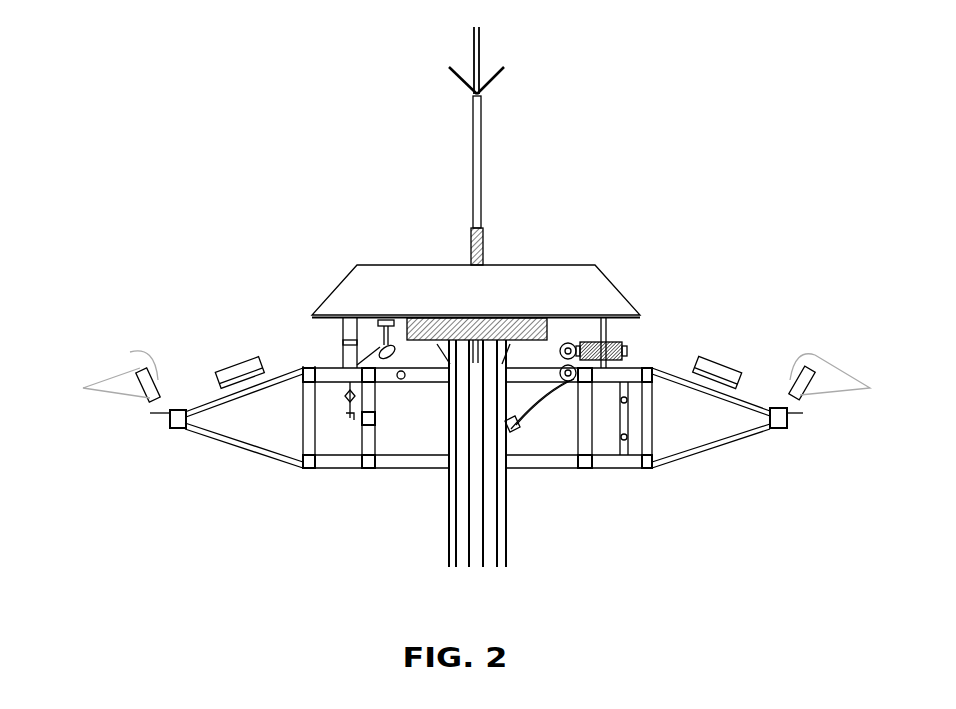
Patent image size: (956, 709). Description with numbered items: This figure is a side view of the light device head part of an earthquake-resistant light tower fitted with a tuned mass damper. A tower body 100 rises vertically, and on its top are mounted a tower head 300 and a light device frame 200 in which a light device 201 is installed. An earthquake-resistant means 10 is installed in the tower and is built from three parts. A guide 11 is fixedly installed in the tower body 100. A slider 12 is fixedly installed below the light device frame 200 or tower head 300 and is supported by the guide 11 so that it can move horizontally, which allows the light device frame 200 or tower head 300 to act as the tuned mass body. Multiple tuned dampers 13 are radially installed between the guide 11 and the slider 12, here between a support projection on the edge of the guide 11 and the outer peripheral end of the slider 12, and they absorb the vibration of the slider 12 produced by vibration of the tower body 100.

The tower body 100 is at (460, 520).
The light device frame 200 is at (248, 452).
The light device 201 is at (132, 358).
The tower head 300 is at (357, 264).
The earthquake-resistant means 10 is at (681, 257).
The guide 11 is at (553, 360).
The slider 12 is at (493, 312).
The tuned damper 13 is at (550, 315).